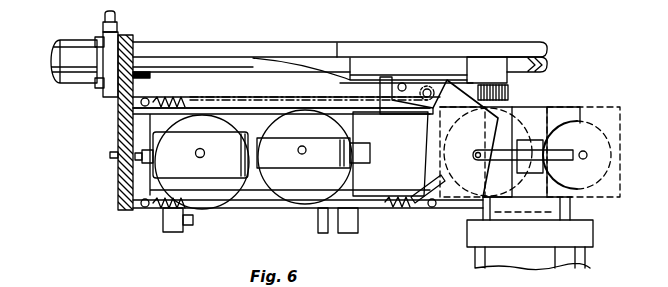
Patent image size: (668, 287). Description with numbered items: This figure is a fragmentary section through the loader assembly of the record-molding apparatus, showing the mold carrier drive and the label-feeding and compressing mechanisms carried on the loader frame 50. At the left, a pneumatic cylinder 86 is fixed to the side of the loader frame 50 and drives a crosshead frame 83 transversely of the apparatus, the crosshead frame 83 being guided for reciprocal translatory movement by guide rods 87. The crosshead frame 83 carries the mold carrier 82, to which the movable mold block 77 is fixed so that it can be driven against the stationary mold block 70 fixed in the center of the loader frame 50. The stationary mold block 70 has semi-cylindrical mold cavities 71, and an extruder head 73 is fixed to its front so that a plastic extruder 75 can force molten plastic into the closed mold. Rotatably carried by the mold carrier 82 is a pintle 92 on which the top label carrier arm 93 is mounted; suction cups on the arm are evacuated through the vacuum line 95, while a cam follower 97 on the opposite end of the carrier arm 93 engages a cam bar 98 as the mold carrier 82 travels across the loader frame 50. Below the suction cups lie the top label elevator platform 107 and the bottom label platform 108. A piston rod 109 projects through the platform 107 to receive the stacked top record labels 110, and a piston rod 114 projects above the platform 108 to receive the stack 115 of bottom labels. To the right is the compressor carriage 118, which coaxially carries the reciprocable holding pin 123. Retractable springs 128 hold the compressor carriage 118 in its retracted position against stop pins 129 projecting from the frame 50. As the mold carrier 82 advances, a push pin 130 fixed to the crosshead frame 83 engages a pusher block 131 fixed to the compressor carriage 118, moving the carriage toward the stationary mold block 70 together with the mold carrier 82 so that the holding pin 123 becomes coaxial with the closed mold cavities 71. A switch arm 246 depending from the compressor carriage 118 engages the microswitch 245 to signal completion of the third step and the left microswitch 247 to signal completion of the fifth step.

The loader frame 50 is at (110, 191).
The pneumatic cylinder 86 is at (78, 52).
The guide rods 87 is at (145, 60).
The cam bar 98 is at (283, 62).
The mold carrier 82 is at (385, 78).
The cam follower 97 is at (403, 83).
The pintle 92 is at (429, 89).
The push rod or pin 130 is at (503, 65).
The crosshead frame 83 is at (510, 63).
The pusher block or arm 131 is at (517, 90).
The holding pin 123 is at (475, 153).
The stationary mold block 70 is at (533, 122).
The mold cavities 71 is at (575, 119).
The movable mold block 77 is at (620, 120).
The top label carrier arm 93 is at (437, 130).
The stop pins 129 is at (370, 153).
The top label elevator platform 107 is at (192, 157).
The piston rod 109 is at (203, 157).
The bottom label platform 108 is at (290, 161).
The piston rod 114 is at (318, 141).
The retractable springs 128 is at (148, 100).
The stacked top record labels 110 is at (237, 116).
The stack of bottom labels 115 is at (290, 96).
The vacuum line 95 is at (432, 191).
The compressor carriage 118 is at (437, 205).
The left microswitch 247 is at (170, 226).
The switch arm 246 is at (318, 228).
The microswitch 245 is at (350, 234).
The extruder head 73 is at (580, 214).
The plastic extruder 75 is at (585, 262).